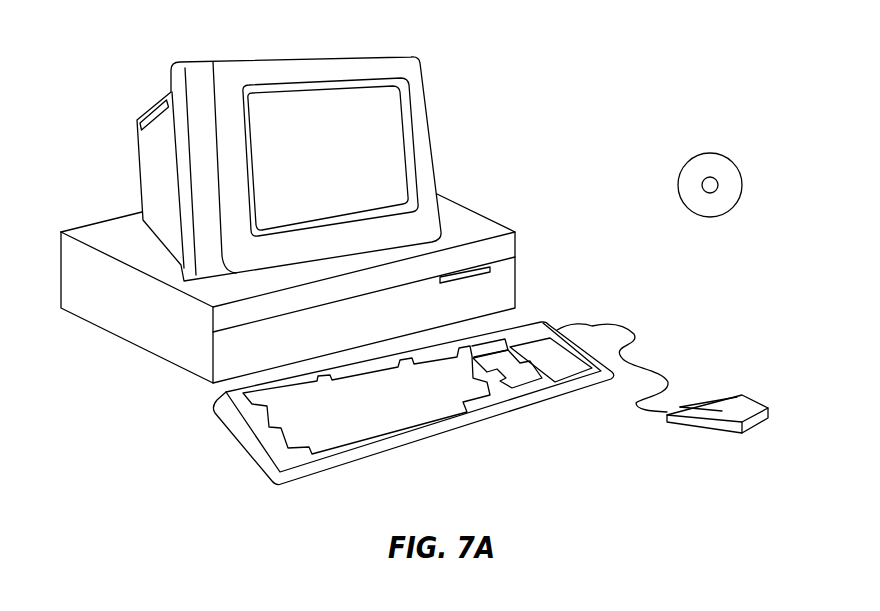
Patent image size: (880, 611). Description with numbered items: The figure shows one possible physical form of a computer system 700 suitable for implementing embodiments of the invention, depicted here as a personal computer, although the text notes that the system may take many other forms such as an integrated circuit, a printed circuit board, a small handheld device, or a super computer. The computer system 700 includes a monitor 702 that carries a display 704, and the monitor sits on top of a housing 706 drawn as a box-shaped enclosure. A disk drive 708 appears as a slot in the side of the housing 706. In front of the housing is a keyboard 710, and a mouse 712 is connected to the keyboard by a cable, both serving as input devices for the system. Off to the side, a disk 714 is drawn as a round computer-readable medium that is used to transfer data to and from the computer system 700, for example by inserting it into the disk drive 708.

The computer system 700 is at (636, 48).
The monitor 702 is at (434, 168).
The display 704 is at (393, 120).
The housing 706 is at (177, 283).
The disk drive 708 is at (490, 267).
The keyboard 710 is at (417, 442).
The mouse 712 is at (758, 398).
The disk 714 is at (725, 153).